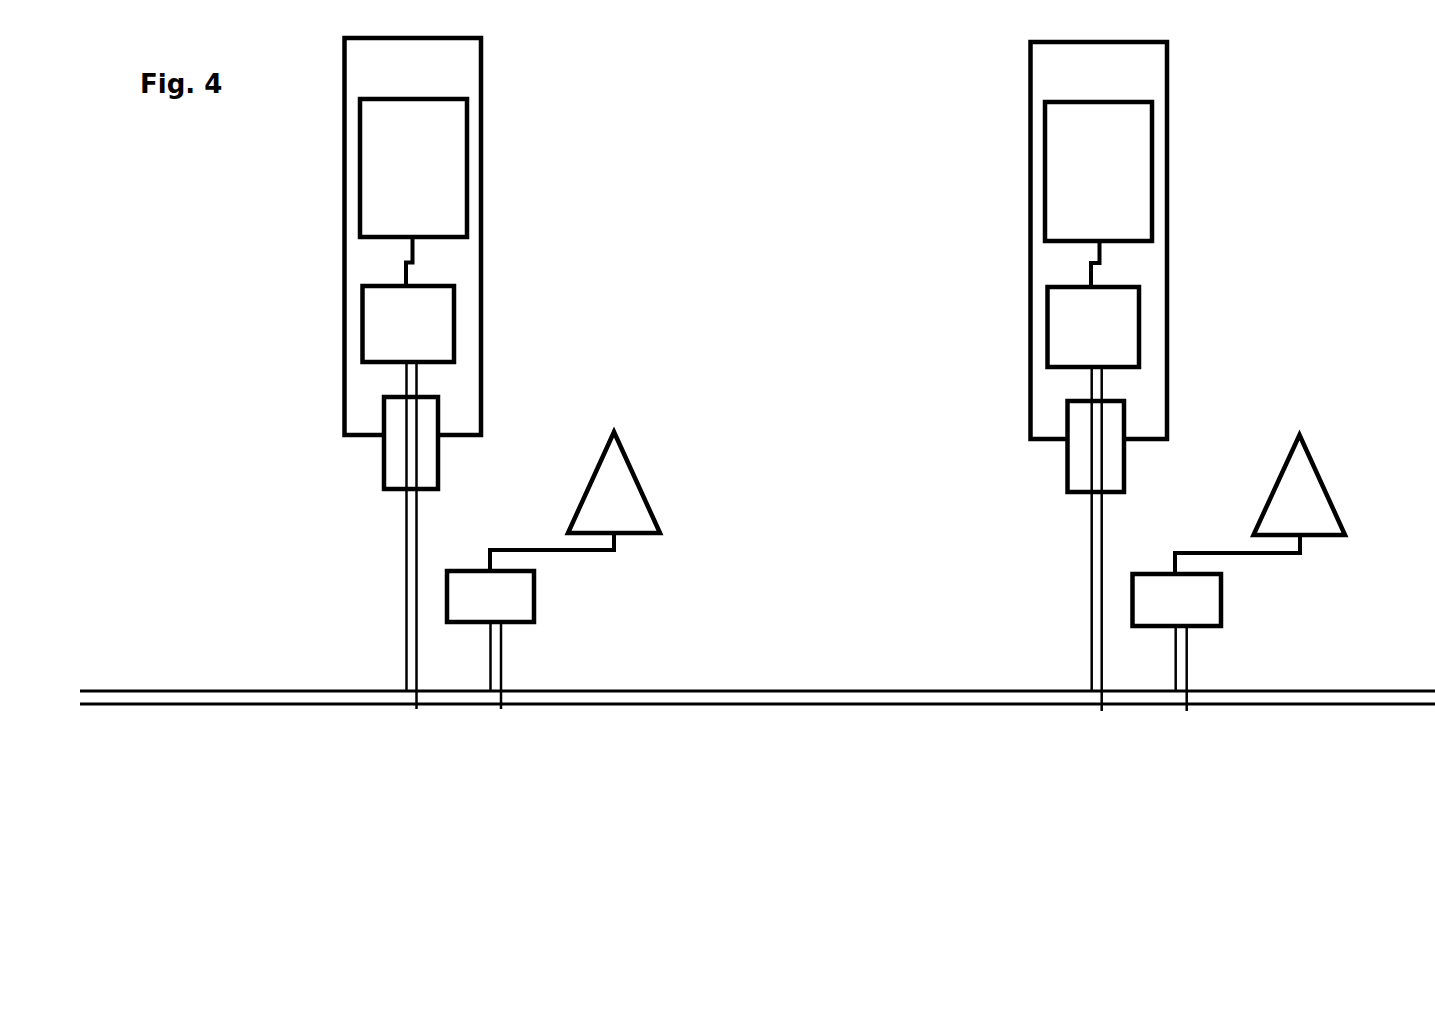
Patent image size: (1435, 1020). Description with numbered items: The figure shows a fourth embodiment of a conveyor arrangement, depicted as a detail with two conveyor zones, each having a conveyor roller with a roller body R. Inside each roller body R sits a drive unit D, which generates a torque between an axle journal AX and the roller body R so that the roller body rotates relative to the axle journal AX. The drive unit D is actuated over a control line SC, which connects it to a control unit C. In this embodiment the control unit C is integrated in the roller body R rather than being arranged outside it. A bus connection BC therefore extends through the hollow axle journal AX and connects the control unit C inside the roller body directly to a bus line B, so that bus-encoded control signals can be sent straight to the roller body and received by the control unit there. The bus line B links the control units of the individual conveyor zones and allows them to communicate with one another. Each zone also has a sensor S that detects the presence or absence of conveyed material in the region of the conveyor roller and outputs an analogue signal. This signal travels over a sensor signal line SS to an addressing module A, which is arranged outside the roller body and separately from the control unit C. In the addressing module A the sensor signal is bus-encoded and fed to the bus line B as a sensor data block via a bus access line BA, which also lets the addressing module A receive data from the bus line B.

The roller body R is at (483, 240).
The drive unit D is at (756, 170).
The control line SC is at (403, 266).
The control unit C is at (751, 326).
The axle journal AX is at (441, 477).
The bus connection BC is at (405, 620).
The sensor S is at (956, 483).
The sensor signal line SS is at (553, 548).
The addressing module A is at (834, 598).
The bus access line BA is at (503, 665).
The bus line B is at (668, 690).